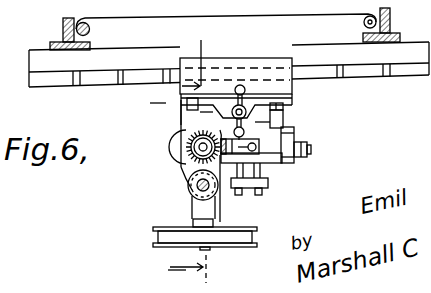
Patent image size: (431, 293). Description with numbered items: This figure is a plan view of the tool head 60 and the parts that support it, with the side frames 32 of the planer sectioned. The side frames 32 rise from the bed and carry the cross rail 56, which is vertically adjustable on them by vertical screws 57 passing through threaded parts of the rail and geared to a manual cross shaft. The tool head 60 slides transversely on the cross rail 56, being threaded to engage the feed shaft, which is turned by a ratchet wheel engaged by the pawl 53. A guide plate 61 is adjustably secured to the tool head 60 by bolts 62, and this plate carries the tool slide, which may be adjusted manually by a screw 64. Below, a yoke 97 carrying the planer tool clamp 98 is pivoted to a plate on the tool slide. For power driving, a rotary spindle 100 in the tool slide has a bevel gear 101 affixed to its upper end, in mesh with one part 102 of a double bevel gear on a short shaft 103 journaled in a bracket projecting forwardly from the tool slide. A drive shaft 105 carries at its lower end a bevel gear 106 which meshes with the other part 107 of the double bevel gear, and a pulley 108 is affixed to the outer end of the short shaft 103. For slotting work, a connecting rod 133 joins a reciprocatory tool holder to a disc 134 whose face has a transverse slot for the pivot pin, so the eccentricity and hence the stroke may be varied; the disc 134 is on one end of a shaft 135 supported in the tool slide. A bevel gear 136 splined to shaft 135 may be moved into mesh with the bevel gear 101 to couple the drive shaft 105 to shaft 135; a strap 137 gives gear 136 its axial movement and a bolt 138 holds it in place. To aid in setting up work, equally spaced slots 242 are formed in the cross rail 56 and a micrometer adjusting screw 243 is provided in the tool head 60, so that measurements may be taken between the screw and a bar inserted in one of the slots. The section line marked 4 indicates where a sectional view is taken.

The section line 4 is at (178, 161).
The side frames 32 is at (63, 40).
The pawl 53 is at (213, 118).
The cross rail 56 is at (304, 22).
The vertical screws 57 is at (90, 30).
The tool head 60 is at (229, 64).
The guide plate 61 is at (284, 107).
The bolts 62 is at (182, 112).
The screw 64 is at (284, 119).
The yoke 97 is at (272, 164).
The planer tool clamp 98 is at (250, 190).
The rotary spindle 100 is at (199, 147).
The bevel gear 101 is at (196, 158).
The part of double bevel gear 102 is at (196, 162).
The short shaft 103 is at (209, 251).
The drive shaft 105 is at (198, 190).
The bevel gear 106 is at (189, 188).
The part of double bevel gear 107 is at (190, 172).
The pulley 108 is at (187, 237).
The connecting rod 133 is at (301, 155).
The disc 134 is at (295, 136).
The shaft 135 is at (232, 188).
The bevel gear 136 is at (229, 110).
The strap 137 is at (252, 129).
The bolt 138 is at (256, 150).
The slots 242 is at (386, 76).
The micrometer adjusting screw 243 is at (293, 84).